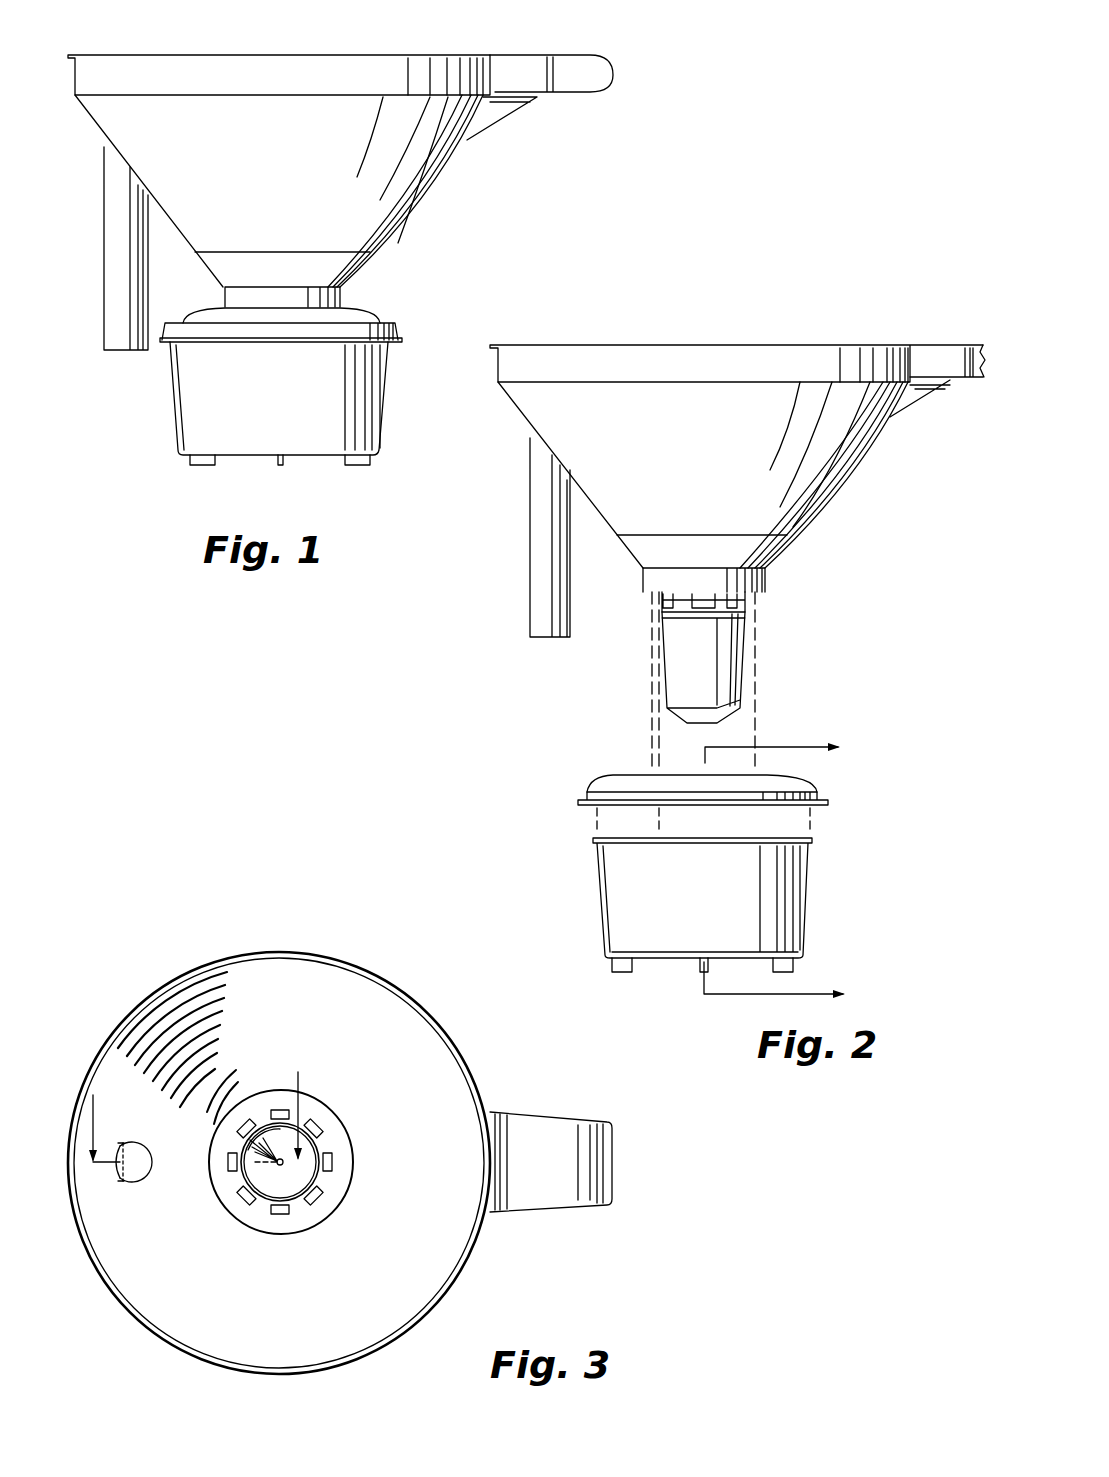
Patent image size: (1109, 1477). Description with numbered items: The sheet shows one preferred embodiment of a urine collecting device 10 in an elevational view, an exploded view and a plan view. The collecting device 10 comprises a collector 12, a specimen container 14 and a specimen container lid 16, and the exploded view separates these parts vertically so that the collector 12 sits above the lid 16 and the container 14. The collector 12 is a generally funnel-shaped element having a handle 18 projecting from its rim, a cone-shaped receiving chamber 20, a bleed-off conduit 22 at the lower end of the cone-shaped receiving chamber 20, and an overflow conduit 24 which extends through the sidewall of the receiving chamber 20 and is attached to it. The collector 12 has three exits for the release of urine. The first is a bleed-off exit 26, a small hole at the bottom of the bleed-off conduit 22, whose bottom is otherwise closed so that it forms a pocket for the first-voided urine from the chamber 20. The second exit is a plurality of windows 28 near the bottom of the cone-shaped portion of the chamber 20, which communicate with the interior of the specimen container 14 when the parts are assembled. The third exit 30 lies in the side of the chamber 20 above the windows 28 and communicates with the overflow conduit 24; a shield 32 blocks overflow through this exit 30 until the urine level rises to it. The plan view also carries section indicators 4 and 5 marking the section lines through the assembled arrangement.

In FIG. 1, the collecting device 10 is at (650, 70).
In FIG. 2, the collecting device 10 is at (890, 280).
In FIG. 3, the collecting device 10 is at (118, 886).
In FIG. 1, the collector 12 is at (432, 186).
In FIG. 2, the collector 12 is at (838, 497).
In FIG. 3, the collector 12 is at (216, 956).
In FIG. 1, the specimen container 14 is at (172, 428).
In FIG. 2, the specimen container 14 is at (596, 888).
In FIG. 1, the specimen container lid 16 is at (378, 302).
In FIG. 2, the specimen container lid 16 is at (620, 776).
In FIG. 1, the handle 18 is at (547, 57).
In FIG. 2, the handle 18 is at (982, 325).
In FIG. 3, the handle 18 is at (520, 1213).
In FIG. 1, the cone-shaped receiving chamber 20 is at (445, 76).
In FIG. 2, the cone-shaped receiving chamber 20 is at (770, 344).
In FIG. 3, the cone-shaped receiving chamber 20 is at (295, 966).
In FIG. 2, the bleed-off conduit 22 is at (745, 667).
In FIG. 1, the overflow conduit 24 is at (118, 350).
In FIG. 2, the overflow conduit 24 is at (550, 537).
In FIG. 3, the bleed-off exit 26 is at (280, 1168).
In FIG. 2, the windows 28 is at (700, 606).
In FIG. 3, the windows 28 is at (316, 1178).
In FIG. 3, the overflow exit 30 is at (128, 1145).
In FIG. 3, the shield 32 is at (125, 1180).
In FIG. 2, the section line 4- 4 is at (784, 859).
In FIG. 3, the section line 5- 5 is at (206, 1103).